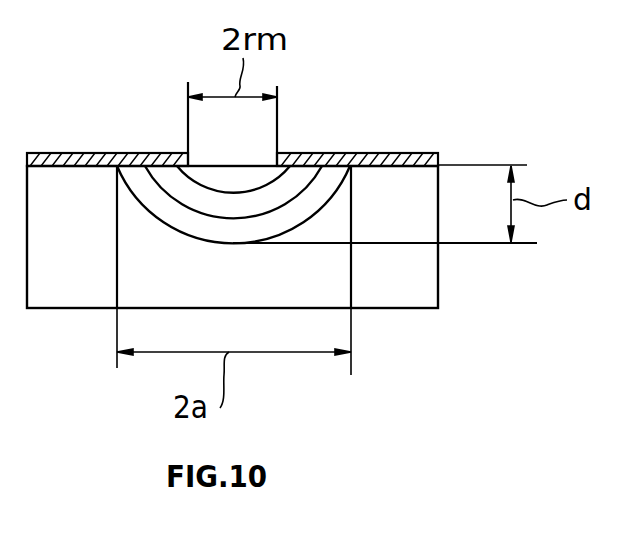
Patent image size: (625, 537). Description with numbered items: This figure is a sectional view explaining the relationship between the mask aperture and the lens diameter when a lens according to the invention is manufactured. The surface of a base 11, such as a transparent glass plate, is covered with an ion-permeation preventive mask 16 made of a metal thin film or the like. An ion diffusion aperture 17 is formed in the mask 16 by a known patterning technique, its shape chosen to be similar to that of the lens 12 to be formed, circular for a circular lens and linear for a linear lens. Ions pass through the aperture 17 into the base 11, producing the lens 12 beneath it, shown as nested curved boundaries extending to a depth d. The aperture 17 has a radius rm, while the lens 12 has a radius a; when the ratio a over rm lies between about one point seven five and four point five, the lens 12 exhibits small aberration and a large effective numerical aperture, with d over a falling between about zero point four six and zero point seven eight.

The base 11 is at (420, 283).
The lens 12 is at (342, 165).
The ion-permeation preventive mask 16 is at (109, 165).
The ion diffusion aperture 17 is at (253, 150).